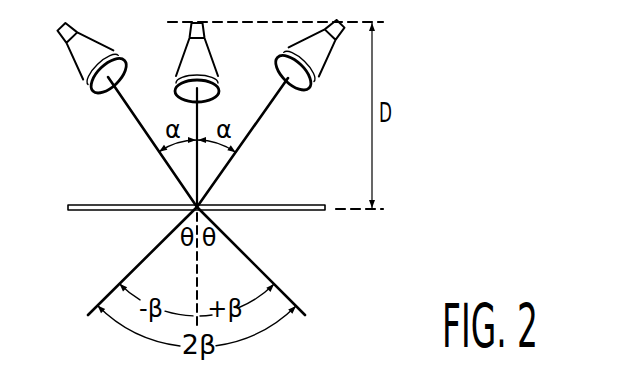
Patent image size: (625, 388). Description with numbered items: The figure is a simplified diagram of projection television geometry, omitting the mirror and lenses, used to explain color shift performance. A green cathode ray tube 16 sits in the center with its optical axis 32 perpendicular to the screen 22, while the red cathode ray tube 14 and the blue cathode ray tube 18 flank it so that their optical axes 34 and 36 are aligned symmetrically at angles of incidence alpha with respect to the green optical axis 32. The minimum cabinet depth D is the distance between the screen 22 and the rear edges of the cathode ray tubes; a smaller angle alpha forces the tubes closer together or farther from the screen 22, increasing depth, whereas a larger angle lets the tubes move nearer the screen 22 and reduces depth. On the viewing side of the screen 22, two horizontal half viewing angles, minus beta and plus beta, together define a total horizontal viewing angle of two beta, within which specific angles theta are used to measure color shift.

The red cathode ray tube 14 is at (325, 68).
The green cathode ray tube 16 is at (190, 39).
The blue cathode ray tube 18 is at (84, 78).
The screen 22 is at (97, 203).
The optical axis of the green cathode ray tube 32 is at (199, 110).
The optical axis of the red cathode ray tube 34 is at (245, 141).
The optical axis of the blue cathode ray tube 36 is at (142, 130).